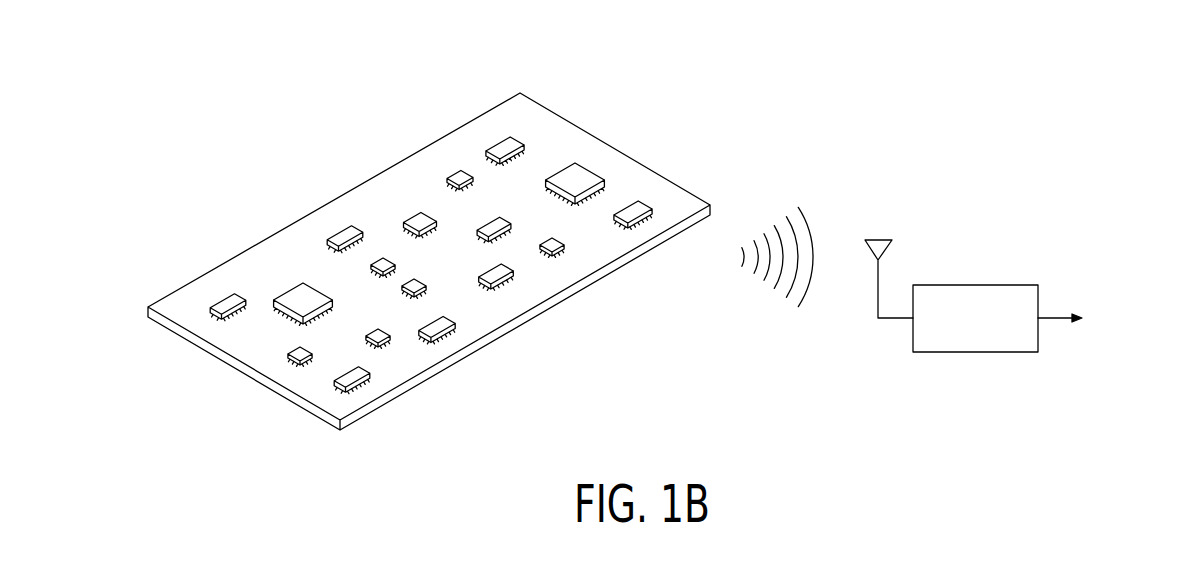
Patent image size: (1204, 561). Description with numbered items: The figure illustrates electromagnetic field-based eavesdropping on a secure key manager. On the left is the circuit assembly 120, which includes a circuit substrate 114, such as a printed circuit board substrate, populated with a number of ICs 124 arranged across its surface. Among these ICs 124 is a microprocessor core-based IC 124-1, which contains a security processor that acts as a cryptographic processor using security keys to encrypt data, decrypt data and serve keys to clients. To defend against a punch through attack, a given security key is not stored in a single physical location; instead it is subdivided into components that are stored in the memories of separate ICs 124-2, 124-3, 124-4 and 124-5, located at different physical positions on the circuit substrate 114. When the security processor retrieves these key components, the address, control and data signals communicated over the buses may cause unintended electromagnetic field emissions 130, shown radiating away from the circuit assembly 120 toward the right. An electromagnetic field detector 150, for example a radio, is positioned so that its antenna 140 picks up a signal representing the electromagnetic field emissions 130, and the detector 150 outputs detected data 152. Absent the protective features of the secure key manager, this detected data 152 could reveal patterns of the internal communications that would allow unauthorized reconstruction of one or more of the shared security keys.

The circuit substrate 114 is at (492, 138).
The circuit assembly 120 is at (584, 97).
The ICs 124 is at (435, 145).
The microprocessor core-based IC 124-1 is at (300, 298).
The IC 124-2 is at (458, 175).
The IC 124-3 is at (563, 243).
The IC 124-4 is at (426, 281).
The IC 124-5 is at (300, 357).
The electromagnetic field emissions 130 is at (807, 217).
The antenna 140 is at (880, 239).
The electromagnetic field detector 150 is at (983, 285).
The detected data 152 is at (1148, 286).